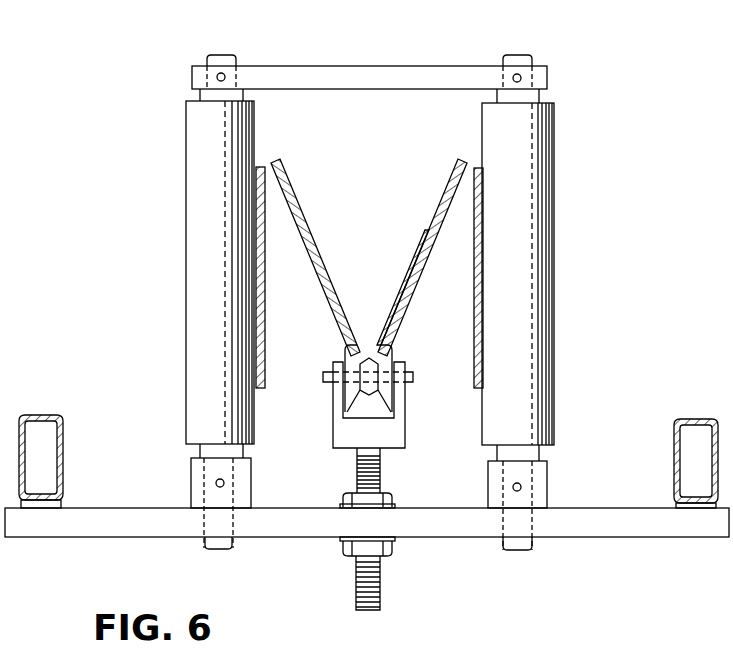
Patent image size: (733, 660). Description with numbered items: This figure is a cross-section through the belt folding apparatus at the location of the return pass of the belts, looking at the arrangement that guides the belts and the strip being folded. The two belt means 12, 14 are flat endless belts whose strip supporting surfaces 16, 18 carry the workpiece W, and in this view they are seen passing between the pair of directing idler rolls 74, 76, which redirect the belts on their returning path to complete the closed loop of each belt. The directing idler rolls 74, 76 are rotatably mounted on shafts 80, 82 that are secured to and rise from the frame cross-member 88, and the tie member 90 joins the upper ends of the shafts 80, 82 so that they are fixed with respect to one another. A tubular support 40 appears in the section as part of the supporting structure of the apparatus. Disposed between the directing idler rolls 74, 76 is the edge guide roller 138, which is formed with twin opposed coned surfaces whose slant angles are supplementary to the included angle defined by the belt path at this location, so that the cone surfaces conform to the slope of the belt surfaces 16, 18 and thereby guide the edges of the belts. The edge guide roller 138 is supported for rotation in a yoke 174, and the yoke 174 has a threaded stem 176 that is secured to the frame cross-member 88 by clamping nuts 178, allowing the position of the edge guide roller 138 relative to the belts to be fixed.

The belt means 12 is at (436, 233).
The belt means 14 is at (265, 283).
The strip supporting surface 16 is at (453, 197).
The strip supporting surface 18 is at (291, 214).
The tubular support 40 is at (63, 453).
The directing idler roll 74 is at (554, 236).
The directing idler roll 76 is at (186, 232).
The shaft 80 is at (512, 56).
The shaft 82 is at (216, 56).
The frame cross-member 88 is at (446, 508).
The tie member 90 is at (330, 66).
The edge guide roller 138 is at (392, 356).
The yoke 174 is at (406, 422).
The threaded stem 176 is at (381, 484).
The clamping nuts 178 is at (345, 498).
The workpiece W is at (340, 300).